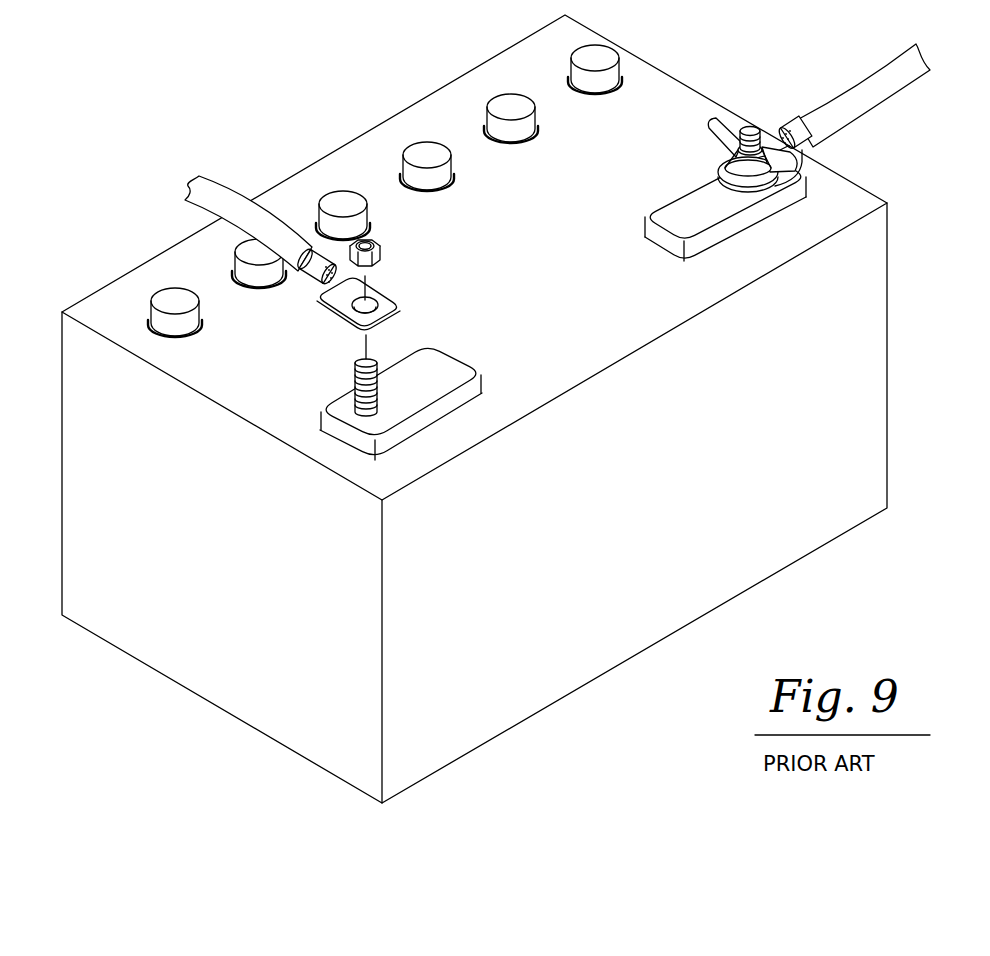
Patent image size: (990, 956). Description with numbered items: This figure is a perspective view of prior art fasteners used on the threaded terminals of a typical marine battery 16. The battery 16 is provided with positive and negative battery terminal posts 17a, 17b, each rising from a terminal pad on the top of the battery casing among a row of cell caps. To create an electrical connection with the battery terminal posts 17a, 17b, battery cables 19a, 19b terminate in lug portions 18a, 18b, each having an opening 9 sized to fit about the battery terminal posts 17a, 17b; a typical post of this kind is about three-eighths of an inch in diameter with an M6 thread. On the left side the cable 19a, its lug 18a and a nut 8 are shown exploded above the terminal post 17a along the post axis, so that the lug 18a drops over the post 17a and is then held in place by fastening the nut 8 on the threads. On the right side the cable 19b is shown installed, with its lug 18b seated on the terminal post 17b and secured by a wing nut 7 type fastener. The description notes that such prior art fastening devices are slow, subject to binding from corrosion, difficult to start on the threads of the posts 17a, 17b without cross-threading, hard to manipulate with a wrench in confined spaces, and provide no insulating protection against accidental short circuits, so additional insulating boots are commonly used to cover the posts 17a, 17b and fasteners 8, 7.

The wing nut 7 is at (710, 128).
The nut 8 is at (381, 243).
The opening 9 is at (376, 303).
The marine battery 16 is at (524, 277).
The battery terminal post 17a is at (354, 381).
The battery terminal post 17b is at (750, 127).
The lug portion 18a is at (347, 321).
The lug portion 18b is at (722, 174).
The battery cable 19a is at (221, 187).
The battery cable 19b is at (853, 110).